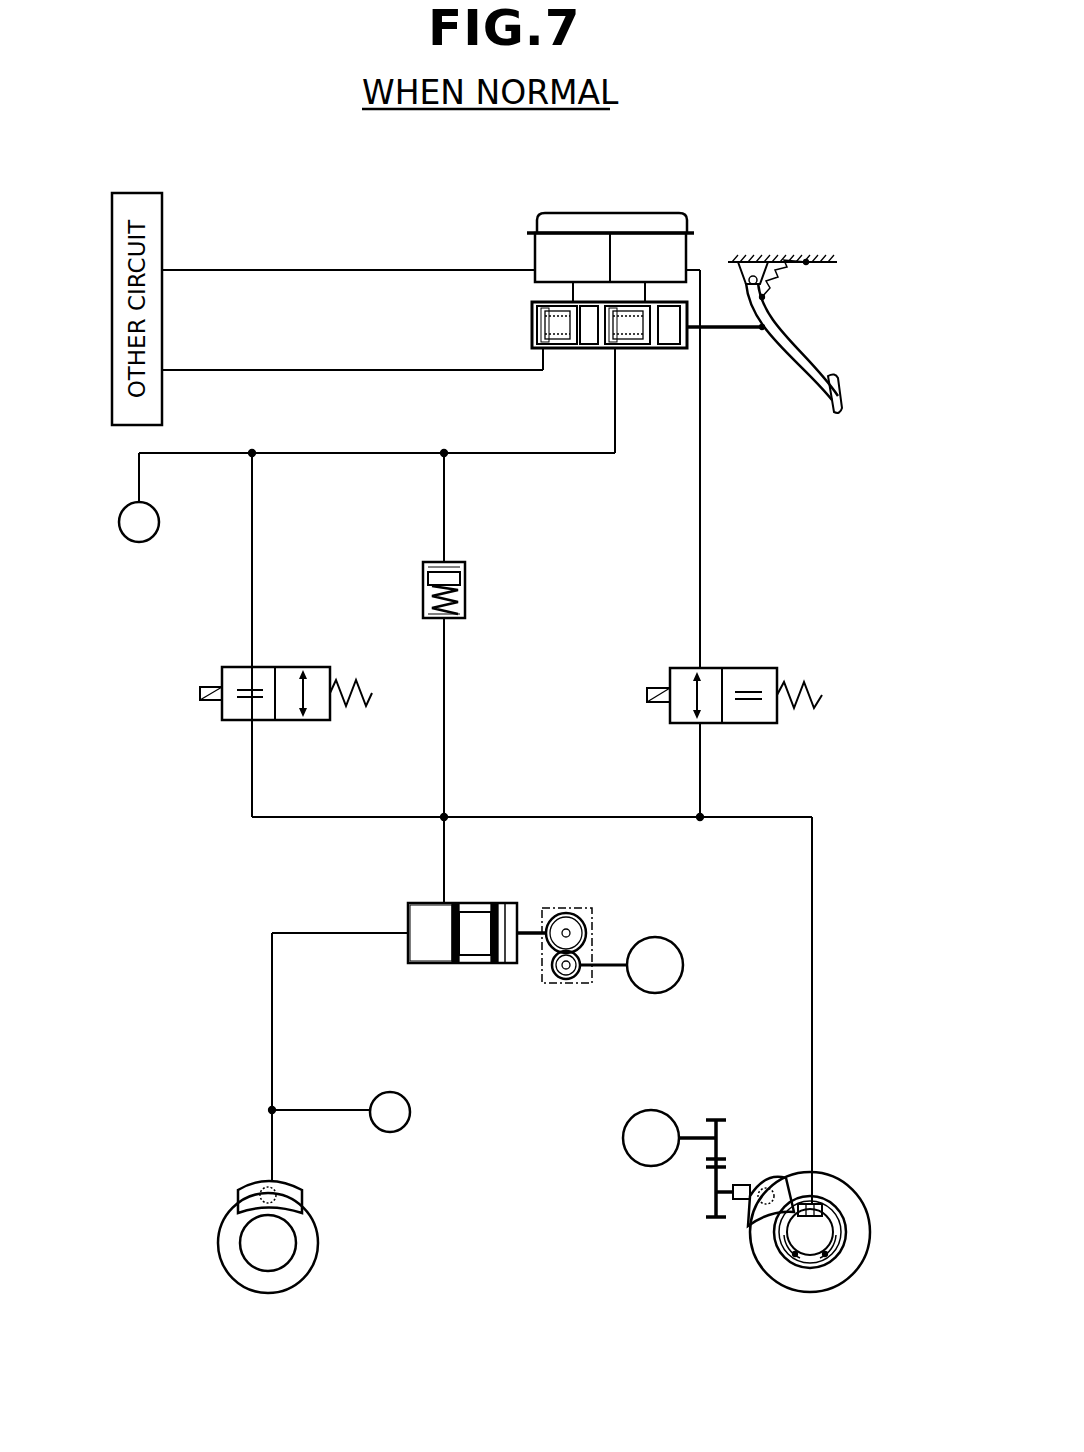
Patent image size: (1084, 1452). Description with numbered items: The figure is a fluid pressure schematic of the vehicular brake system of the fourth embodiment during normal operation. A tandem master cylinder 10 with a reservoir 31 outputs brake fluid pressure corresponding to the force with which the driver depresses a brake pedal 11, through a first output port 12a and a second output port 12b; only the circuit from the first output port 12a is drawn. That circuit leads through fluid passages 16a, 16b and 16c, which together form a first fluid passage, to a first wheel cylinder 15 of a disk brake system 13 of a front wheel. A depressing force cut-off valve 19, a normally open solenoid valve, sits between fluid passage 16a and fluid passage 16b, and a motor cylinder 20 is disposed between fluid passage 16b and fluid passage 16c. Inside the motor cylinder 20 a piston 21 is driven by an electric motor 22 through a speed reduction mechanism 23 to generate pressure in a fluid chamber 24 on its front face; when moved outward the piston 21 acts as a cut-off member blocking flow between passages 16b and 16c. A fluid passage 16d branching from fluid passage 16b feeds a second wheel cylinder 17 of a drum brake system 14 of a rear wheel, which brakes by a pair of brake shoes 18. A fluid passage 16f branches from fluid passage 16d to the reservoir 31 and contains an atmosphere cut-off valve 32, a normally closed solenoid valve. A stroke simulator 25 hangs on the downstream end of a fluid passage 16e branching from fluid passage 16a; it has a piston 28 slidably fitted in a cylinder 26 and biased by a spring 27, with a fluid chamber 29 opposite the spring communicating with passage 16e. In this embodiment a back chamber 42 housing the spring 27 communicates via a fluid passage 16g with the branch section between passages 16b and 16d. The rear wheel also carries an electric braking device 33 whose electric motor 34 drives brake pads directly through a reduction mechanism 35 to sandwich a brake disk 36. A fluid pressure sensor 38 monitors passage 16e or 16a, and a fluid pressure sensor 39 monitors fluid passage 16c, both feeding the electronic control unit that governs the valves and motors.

The tandem master cylinder 10 is at (528, 322).
The brake pedal 11 is at (835, 413).
The first output port 12a is at (618, 350).
The second output port 12b is at (545, 350).
The disk brake system 13 is at (325, 1245).
The drum brake system 14 is at (805, 1240).
The first wheel cylinder 15 is at (258, 1183).
The fluid passage 16a is at (280, 452).
The fluid passage 16b is at (330, 817).
The fluid passage 16c is at (270, 1035).
The fluid passage 16d is at (582, 818).
The fluid passage 16e is at (450, 500).
The fluid passage 16f is at (702, 580).
The fluid passage 16g is at (447, 768).
The second wheel cylinder 17 is at (806, 1200).
The brake shoes 18 is at (780, 1248).
The depressing force cut-off valve 19 is at (236, 725).
The motor cylinder 20 is at (429, 936).
The piston 21 is at (476, 918).
The electric motor 22 is at (682, 975).
The speed reduction mechanism 23 is at (598, 915).
The fluid chamber 24 is at (427, 953).
The stroke simulator 25 is at (431, 593).
The cylinder 26 is at (424, 611).
The spring 27 is at (460, 604).
The piston 28 is at (423, 575).
The fluid chamber 29 is at (461, 565).
The reservoir 31 is at (530, 256).
The atmosphere cut-off valve 32 is at (677, 667).
The electric braking device 33 is at (685, 1150).
The electric motor 34 is at (630, 1120).
The reduction mechanism 35 is at (727, 1129).
The brake disk 36 is at (800, 1285).
The fluid pressure sensor 38 is at (132, 544).
The fluid pressure sensor 39 is at (410, 1118).
The back chamber 42 is at (459, 596).